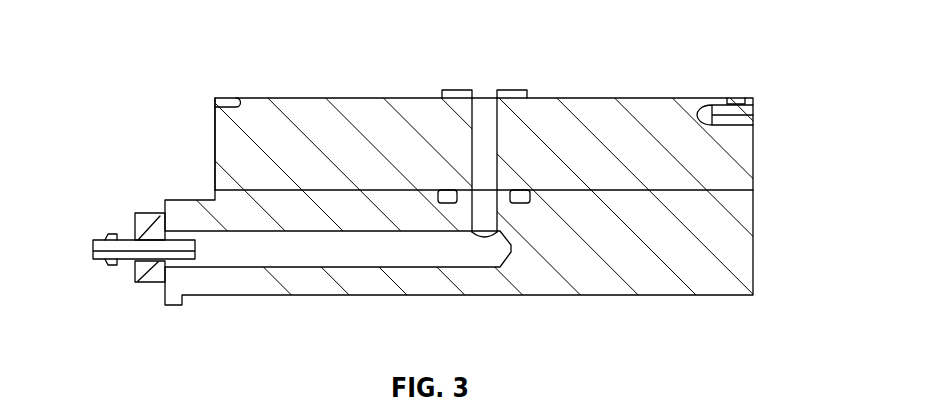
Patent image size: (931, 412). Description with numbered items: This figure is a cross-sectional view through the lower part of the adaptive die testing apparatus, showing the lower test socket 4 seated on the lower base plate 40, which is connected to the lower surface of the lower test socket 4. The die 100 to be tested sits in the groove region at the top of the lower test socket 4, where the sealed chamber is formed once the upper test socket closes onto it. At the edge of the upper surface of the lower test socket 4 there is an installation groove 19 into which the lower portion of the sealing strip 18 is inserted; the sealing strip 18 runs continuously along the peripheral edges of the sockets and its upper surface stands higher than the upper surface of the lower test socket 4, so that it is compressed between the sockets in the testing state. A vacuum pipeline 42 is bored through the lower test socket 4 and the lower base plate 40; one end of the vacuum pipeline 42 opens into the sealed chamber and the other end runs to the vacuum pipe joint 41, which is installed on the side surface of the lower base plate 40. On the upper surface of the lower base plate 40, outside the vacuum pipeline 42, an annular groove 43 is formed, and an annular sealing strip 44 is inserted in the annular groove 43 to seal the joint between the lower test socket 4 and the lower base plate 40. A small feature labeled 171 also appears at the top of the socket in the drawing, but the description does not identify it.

The lower test socket 4 is at (330, 130).
The sealing strip 18 is at (233, 102).
The installation groove 19 is at (217, 110).
The lower base plate 40 is at (703, 247).
The vacuum pipe joint 41 is at (138, 280).
The vacuum pipeline 42 is at (485, 150).
The annular groove 43 is at (530, 203).
The annular sealing strip 44 is at (450, 203).
The die 100 is at (483, 150).
The tab 171 is at (445, 102).